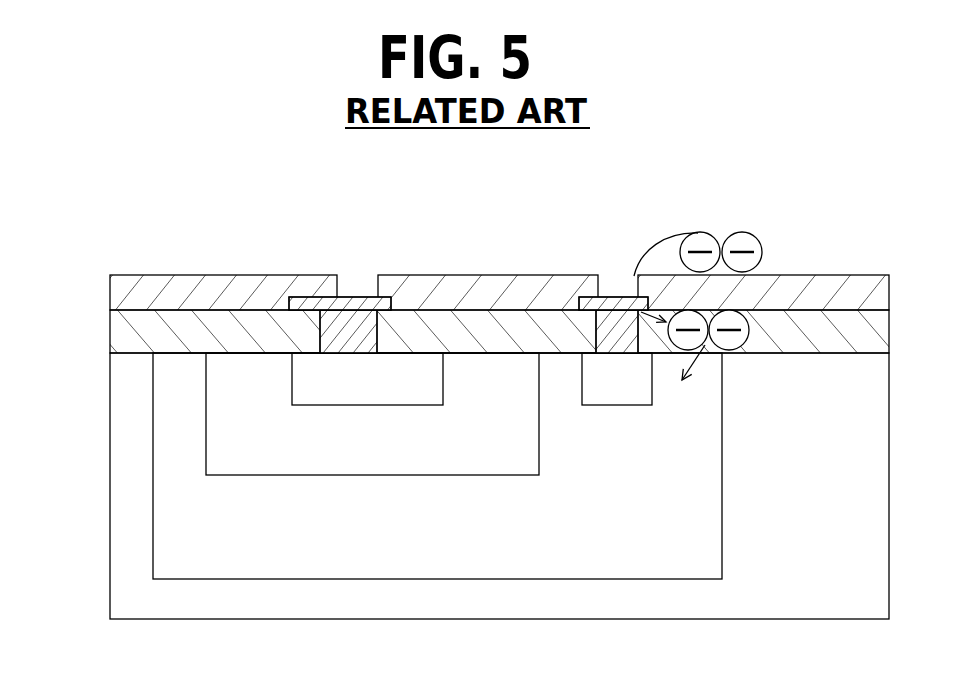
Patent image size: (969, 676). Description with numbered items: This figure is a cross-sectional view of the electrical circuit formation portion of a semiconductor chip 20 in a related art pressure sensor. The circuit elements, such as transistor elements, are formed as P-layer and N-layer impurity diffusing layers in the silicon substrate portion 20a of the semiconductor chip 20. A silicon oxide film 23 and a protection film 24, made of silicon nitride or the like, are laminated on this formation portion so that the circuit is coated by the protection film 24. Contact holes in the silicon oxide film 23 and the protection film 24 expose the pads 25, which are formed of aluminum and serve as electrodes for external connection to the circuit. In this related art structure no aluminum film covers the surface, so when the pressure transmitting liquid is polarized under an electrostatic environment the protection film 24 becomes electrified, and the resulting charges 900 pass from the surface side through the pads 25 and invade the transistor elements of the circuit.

The semiconductor chip 20 is at (108, 553).
The silicon substrate portion 20a is at (132, 494).
The silicon oxide film 23 is at (129, 342).
The protection film 24 is at (131, 290).
The pads 25 is at (357, 296).
The charges 900 is at (759, 232).